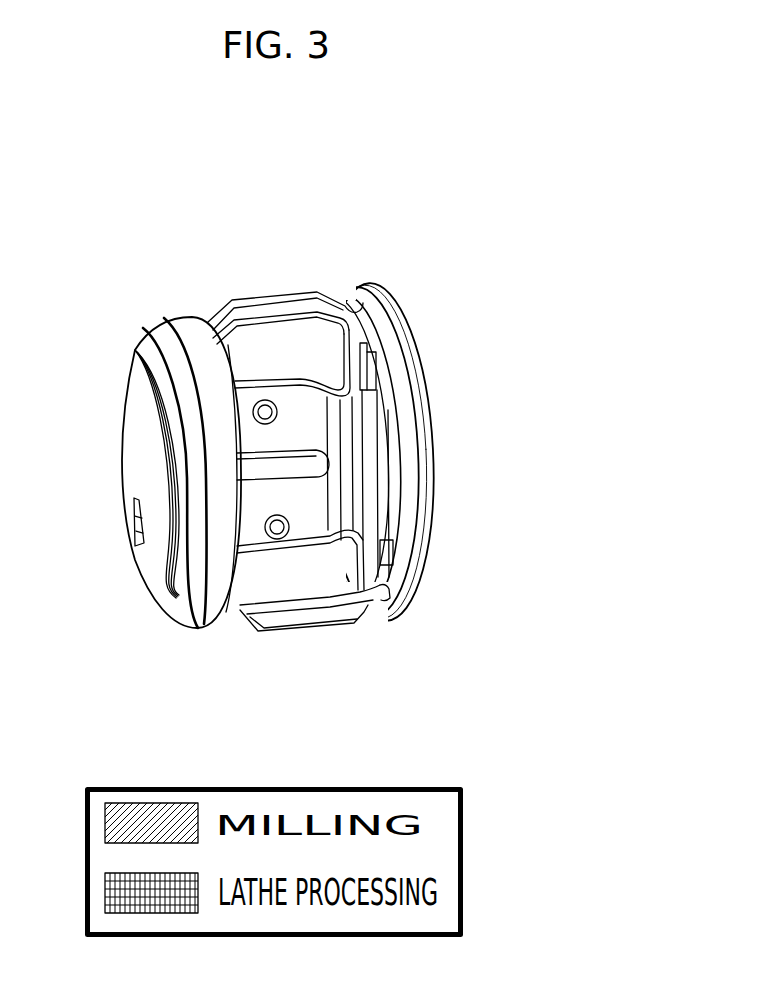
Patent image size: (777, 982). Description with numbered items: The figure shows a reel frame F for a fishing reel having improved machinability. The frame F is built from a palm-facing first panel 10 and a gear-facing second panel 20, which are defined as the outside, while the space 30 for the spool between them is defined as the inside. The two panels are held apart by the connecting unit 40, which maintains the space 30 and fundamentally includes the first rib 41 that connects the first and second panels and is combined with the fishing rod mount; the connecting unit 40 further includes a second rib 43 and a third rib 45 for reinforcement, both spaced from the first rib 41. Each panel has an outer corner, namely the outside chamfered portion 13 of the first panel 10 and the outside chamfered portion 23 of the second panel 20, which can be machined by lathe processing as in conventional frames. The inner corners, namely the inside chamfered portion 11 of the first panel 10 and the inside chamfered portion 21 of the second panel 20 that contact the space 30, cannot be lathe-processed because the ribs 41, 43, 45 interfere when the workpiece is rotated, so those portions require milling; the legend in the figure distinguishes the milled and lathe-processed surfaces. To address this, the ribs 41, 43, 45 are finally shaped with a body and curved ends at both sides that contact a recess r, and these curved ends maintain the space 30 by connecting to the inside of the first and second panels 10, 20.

The first panel 10 is at (124, 327).
The inside chamfered portion 11 is at (204, 320).
The outside chamfered portion 13 is at (163, 335).
The second panel 20 is at (417, 290).
The inside chamfered portion 21 is at (360, 288).
The outside chamfered portion 23 is at (392, 287).
The spool space 30 is at (247, 356).
The connecting unit 40 is at (220, 697).
The first rib 41 is at (312, 527).
The second rib 43 is at (297, 303).
The third rib 45 is at (291, 632).
The recess r is at (386, 616).
The frame F is at (148, 150).